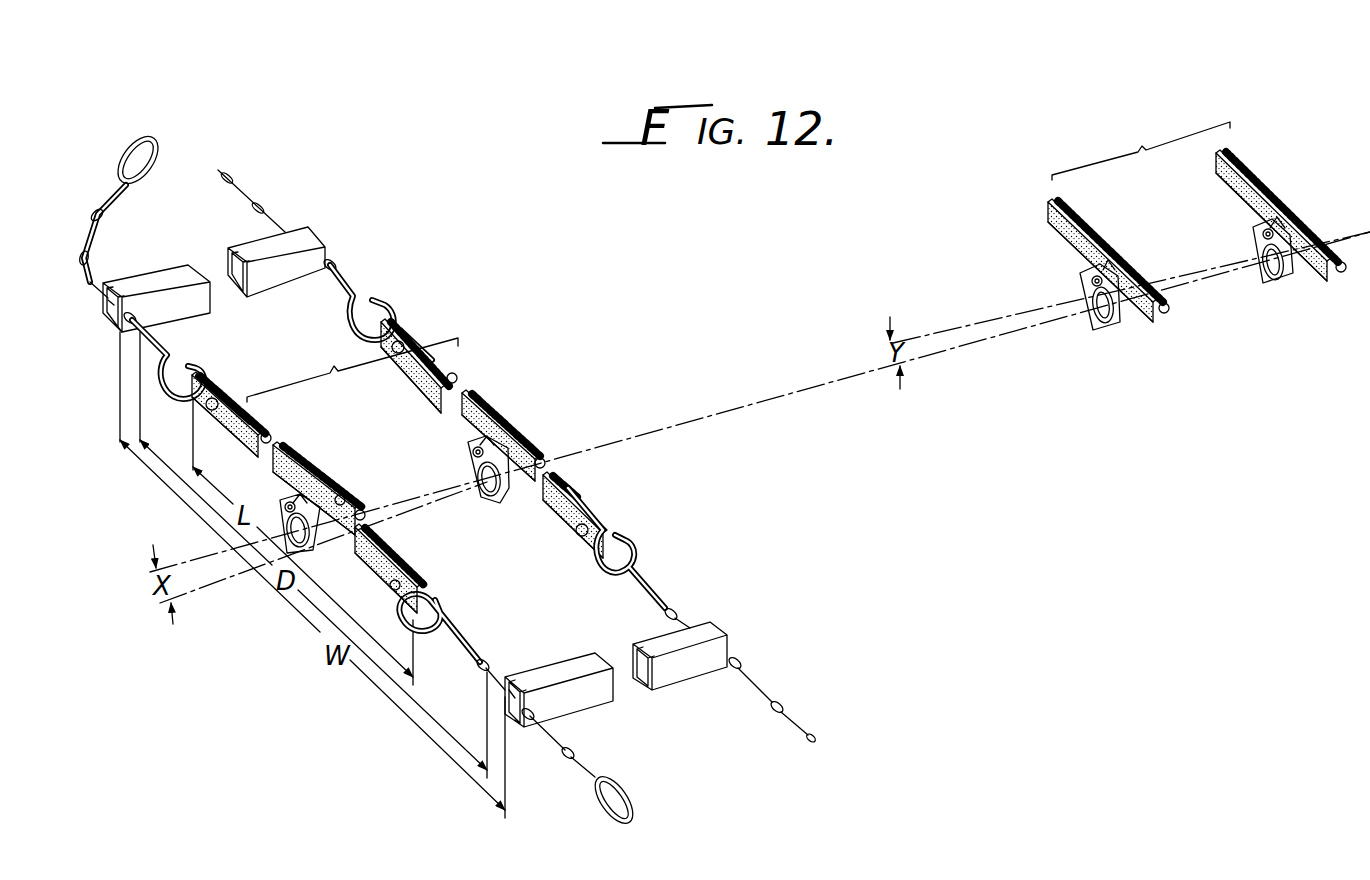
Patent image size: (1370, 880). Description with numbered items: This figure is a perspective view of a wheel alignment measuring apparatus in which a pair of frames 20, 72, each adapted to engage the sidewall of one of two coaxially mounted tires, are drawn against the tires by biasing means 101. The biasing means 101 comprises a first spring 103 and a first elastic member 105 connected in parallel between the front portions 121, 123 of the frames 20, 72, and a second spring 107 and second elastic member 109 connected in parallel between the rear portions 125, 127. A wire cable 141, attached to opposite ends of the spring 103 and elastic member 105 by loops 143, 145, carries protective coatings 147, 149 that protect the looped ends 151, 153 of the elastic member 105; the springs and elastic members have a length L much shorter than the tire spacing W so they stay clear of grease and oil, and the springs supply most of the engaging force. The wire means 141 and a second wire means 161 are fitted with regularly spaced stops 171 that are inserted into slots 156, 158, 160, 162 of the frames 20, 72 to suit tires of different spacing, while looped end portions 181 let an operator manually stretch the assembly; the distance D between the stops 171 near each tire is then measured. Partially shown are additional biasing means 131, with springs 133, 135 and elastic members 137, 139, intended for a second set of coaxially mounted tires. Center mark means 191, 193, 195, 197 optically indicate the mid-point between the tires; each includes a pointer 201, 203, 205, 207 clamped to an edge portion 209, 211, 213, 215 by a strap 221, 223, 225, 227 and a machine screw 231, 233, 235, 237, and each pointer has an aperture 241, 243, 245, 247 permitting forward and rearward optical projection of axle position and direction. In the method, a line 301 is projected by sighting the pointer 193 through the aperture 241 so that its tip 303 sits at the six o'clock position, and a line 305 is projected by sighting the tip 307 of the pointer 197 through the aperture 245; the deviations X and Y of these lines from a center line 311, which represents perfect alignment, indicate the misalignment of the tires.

The frame 20 is at (650, 692).
The frame 72 is at (203, 236).
The biasing means 101 is at (352, 339).
The spring 103 is at (278, 445).
The elastic member 105 is at (273, 455).
The second spring 107 is at (470, 393).
The second elastic member 109 is at (460, 402).
The front portion 121 is at (515, 678).
The front portion 123 is at (118, 283).
The rear portion 125 is at (715, 630).
The rear portion 127 is at (308, 238).
The additional biasing means 131 is at (1141, 148).
The spring 133 is at (1083, 222).
The spring 135 is at (1246, 170).
The elastic member 137 is at (1047, 218).
The elastic member 139 is at (1222, 176).
The wire cable 141 is at (163, 352).
The loop 143 is at (435, 586).
The loop 145 is at (208, 373).
The protective coating 147 is at (443, 613).
The protective coating 149 is at (229, 382).
The looped end 151 is at (407, 597).
The looped end 153 is at (192, 393).
The slot 156 is at (108, 300).
The slot 158 is at (120, 328).
The aperture 160 is at (505, 697).
The wire means 161 is at (658, 594).
The slot 162 is at (515, 722).
The stops 171 is at (105, 215).
The looped end portions 181 is at (150, 148).
The center mark means 191 is at (283, 530).
The center mark means 193 is at (502, 507).
The center mark means 195 is at (1113, 328).
The center mark means 197 is at (1286, 290).
The pointer 201 is at (303, 562).
The pointer 203 is at (487, 502).
The pointer 205 is at (1092, 323).
The pointer 207 is at (1270, 284).
The edge portion 209 is at (326, 485).
The edge portion 211 is at (518, 430).
The edge portion 213 is at (1116, 270).
The edge portion 215 is at (1292, 221).
The strap 221 is at (283, 480).
The strap 223 is at (483, 427).
The strap 225 is at (1090, 254).
The strap 227 is at (1260, 207).
The machine screw 231 is at (356, 488).
The machine screw 233 is at (473, 452).
The machine screw 235 is at (1092, 282).
The nut 237 is at (1263, 235).
The aperture 241 is at (312, 552).
The aperture 243 is at (478, 475).
The aperture 245 is at (1093, 307).
The aperture 247 is at (1266, 260).
The line 301 is at (205, 590).
The tip 303 is at (496, 522).
The line 305 is at (924, 342).
The tip 307 is at (1270, 292).
The center line 311 is at (937, 355).